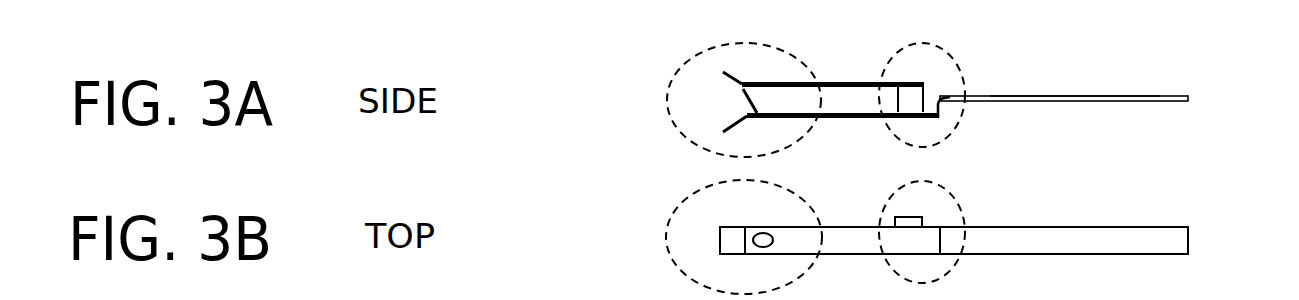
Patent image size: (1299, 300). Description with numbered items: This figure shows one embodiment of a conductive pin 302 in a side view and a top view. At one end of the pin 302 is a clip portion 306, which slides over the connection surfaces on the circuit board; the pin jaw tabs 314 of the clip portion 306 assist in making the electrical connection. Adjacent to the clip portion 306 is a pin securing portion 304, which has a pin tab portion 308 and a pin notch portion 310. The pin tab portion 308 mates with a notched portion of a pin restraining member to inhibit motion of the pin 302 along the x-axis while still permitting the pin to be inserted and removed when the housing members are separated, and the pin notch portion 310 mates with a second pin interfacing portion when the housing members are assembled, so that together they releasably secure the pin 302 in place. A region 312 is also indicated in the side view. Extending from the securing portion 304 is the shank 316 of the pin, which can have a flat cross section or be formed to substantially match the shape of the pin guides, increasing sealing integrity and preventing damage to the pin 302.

In FIG. 3A, the pin 302 is at (1174, 95).
In FIG. 3B, the pin 302 is at (1163, 225).
In FIG. 3A, the pin securing portion 304 is at (888, 128).
In FIG. 3B, the pin securing portion 304 is at (892, 267).
In FIG. 3A, the clip portion 306 is at (677, 139).
In FIG. 3B, the clip portion 306 is at (668, 255).
In FIG. 3B, the pin tab portion 308 is at (915, 217).
In FIG. 3A, the pin notch portion 310 is at (931, 97).
In FIG. 3A, the stiffener housing 312 is at (910, 97).
In FIG. 3A, the pin jaw tabs 314 is at (745, 94).
In FIG. 3B, the pin jaw tabs 314 is at (753, 235).
In FIG. 3A, the shank 316 is at (1052, 95).
In FIG. 3B, the shank 316 is at (1033, 225).